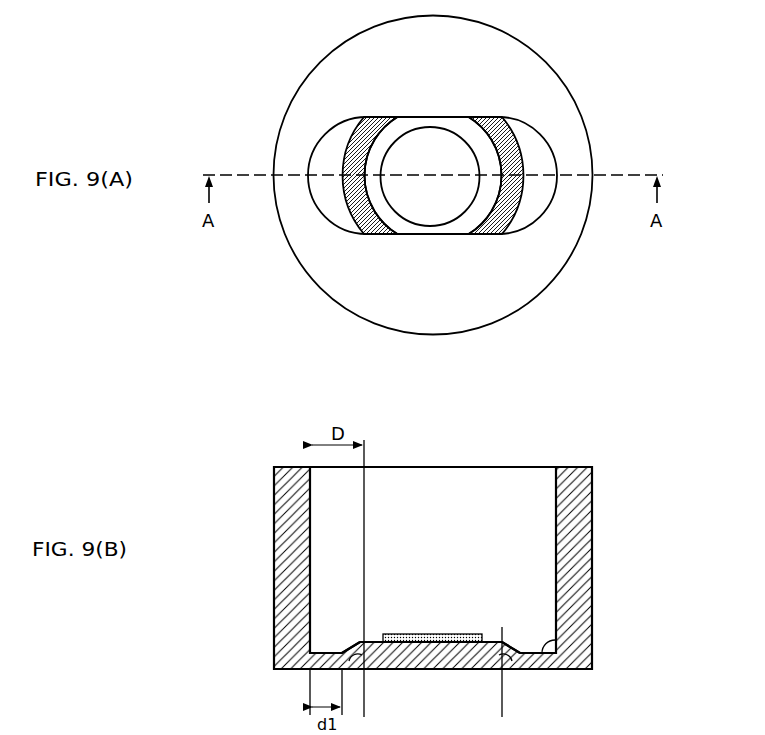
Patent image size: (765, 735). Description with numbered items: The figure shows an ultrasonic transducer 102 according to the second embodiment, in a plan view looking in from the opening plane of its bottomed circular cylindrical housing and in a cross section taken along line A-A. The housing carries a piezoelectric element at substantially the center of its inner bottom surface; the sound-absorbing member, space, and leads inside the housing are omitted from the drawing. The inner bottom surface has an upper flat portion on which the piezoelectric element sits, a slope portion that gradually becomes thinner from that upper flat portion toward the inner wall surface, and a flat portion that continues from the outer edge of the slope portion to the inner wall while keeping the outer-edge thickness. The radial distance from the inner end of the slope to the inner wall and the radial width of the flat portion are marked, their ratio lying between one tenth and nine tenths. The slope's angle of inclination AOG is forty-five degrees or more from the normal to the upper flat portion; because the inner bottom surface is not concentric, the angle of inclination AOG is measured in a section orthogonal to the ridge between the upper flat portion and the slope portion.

The ultrasonic transducer 102 is at (688, 408).
The angle of inclination AOG is at (358, 658).